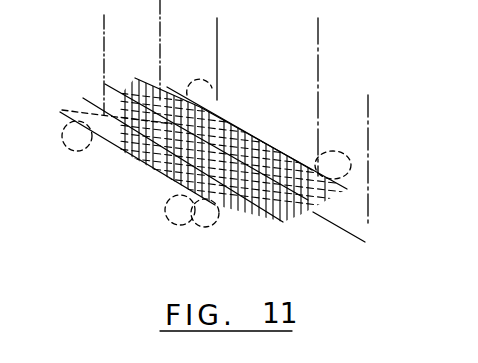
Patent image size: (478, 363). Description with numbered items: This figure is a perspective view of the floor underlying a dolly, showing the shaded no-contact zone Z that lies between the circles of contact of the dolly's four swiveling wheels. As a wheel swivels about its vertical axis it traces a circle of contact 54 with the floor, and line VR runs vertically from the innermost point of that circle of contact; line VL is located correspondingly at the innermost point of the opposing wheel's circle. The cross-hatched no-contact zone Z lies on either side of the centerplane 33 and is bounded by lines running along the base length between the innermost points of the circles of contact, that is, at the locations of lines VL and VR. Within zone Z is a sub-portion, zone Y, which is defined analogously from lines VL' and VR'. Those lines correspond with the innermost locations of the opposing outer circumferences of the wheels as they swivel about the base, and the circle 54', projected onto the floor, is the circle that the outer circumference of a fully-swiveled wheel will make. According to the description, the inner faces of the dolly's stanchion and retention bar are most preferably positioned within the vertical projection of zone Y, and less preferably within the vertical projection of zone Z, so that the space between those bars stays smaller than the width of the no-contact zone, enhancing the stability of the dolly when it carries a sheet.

The line VL' is at (66, 65).
The line VR' is at (180, 50).
The line VL is at (239, 59).
The line VR is at (348, 97).
The no-contact zone Z is at (238, 128).
The zone Y is at (192, 154).
The circle of outer circumference 54' is at (147, 231).
The circle of contact 54 is at (221, 241).
The centerplane 33 is at (368, 222).